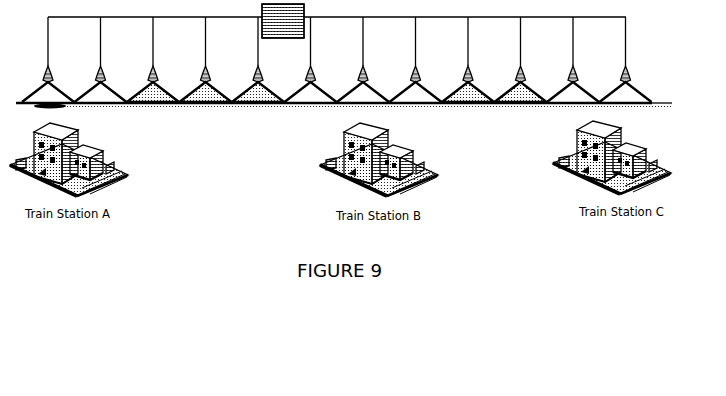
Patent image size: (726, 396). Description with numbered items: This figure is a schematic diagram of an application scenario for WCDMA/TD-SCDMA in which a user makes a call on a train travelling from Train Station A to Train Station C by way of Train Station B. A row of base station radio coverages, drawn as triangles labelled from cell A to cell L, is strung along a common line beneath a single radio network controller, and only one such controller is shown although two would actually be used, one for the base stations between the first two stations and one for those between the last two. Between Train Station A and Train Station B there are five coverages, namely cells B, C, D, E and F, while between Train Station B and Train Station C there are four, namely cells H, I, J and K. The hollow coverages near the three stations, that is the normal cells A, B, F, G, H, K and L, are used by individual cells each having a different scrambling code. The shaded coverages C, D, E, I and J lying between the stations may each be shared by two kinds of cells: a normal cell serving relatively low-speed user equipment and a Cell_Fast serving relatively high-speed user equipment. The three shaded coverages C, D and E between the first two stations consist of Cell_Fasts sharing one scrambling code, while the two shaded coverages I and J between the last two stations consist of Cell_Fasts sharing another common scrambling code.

The cell A is at (48, 61).
The cell B is at (101, 61).
The cell C is at (153, 61).
The cell D is at (206, 61).
The cell E is at (258, 61).
The cell F is at (311, 61).
The cell G is at (363, 61).
The cell H is at (416, 61).
The cell I is at (468, 61).
The cell J is at (521, 61).
The cell K is at (573, 61).
The cell L is at (626, 61).